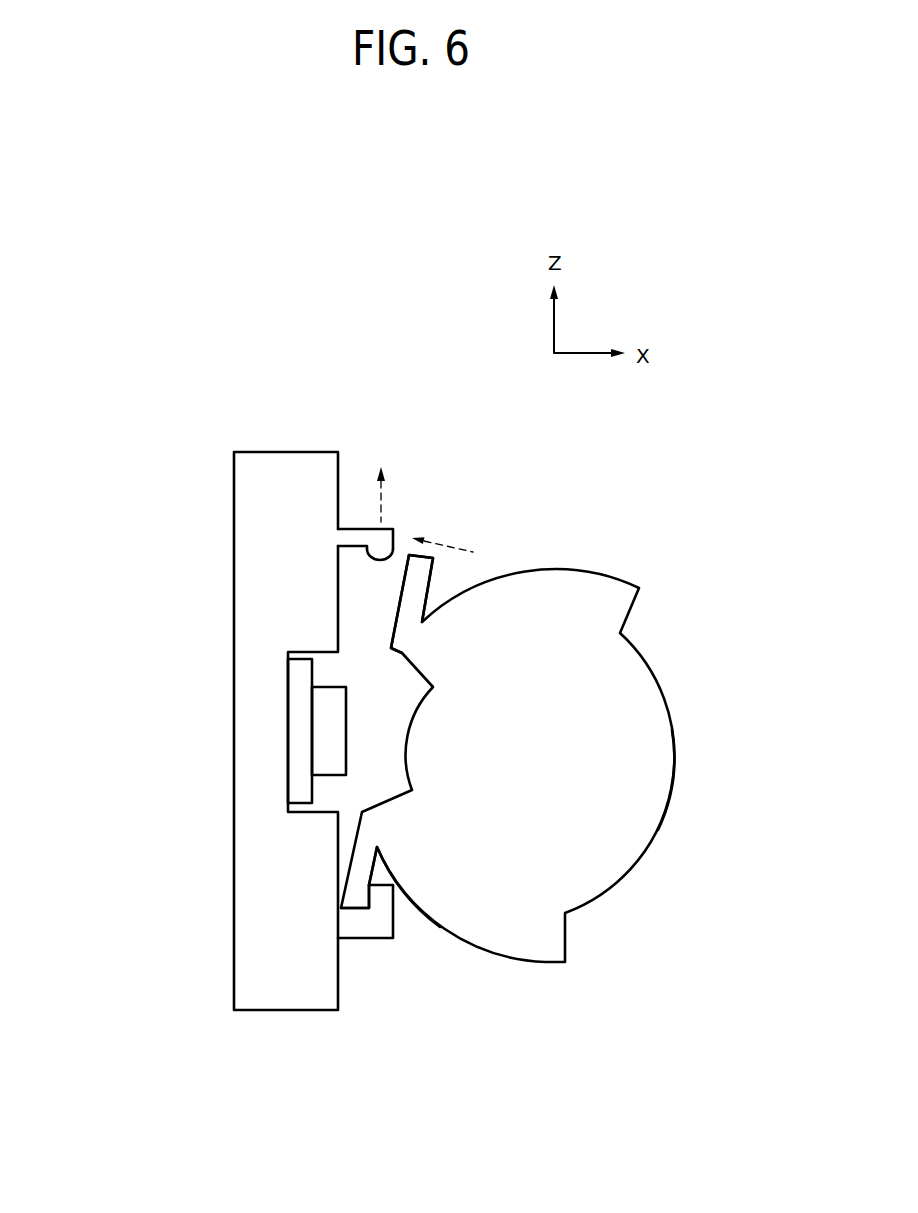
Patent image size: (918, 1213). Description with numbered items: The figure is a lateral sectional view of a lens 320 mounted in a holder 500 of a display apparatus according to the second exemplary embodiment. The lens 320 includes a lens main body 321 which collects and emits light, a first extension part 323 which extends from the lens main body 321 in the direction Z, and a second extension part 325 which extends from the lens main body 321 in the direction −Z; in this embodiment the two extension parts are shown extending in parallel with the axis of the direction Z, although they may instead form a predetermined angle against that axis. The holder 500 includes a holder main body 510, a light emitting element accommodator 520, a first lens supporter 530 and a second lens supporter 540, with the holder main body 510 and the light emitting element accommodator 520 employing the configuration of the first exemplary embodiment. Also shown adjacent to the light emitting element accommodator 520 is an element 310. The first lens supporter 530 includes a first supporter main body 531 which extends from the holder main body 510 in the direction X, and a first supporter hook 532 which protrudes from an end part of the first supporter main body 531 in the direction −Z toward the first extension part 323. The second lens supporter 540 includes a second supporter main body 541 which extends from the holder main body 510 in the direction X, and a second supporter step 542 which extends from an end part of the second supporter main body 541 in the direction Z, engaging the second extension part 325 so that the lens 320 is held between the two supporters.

The holder 500 is at (250, 422).
The holder main body 510 is at (245, 468).
The first lens supporter 530 is at (123, 515).
The first supporter main body 531 is at (353, 538).
The first supporter hook 532 is at (378, 560).
The light emitting element accommodator 520 is at (288, 765).
The second lens supporter 540 is at (123, 870).
The second supporter main body 541 is at (352, 919).
The second supporter step 542 is at (352, 897).
The coupling member 310 is at (280, 703).
The lens 320 is at (670, 859).
The lens main body 321 is at (668, 762).
The first extension part 323 is at (423, 568).
The second extension part 325 is at (383, 897).